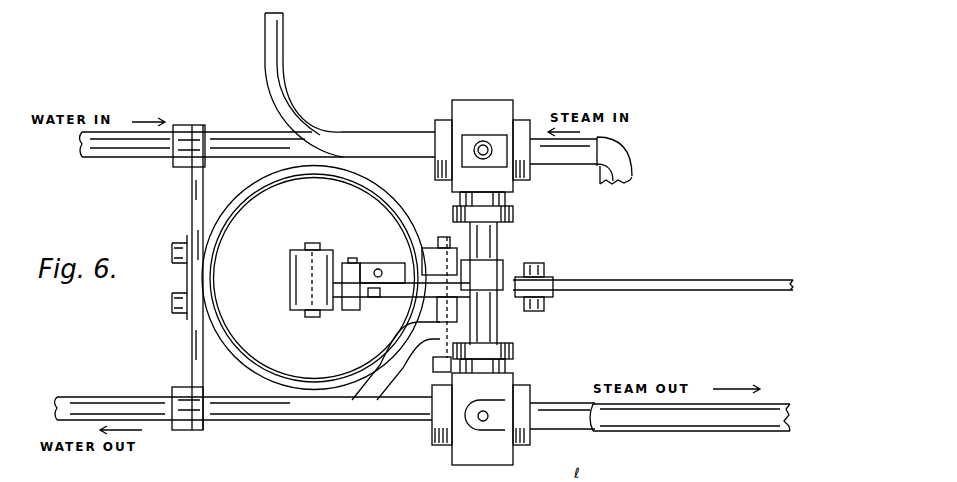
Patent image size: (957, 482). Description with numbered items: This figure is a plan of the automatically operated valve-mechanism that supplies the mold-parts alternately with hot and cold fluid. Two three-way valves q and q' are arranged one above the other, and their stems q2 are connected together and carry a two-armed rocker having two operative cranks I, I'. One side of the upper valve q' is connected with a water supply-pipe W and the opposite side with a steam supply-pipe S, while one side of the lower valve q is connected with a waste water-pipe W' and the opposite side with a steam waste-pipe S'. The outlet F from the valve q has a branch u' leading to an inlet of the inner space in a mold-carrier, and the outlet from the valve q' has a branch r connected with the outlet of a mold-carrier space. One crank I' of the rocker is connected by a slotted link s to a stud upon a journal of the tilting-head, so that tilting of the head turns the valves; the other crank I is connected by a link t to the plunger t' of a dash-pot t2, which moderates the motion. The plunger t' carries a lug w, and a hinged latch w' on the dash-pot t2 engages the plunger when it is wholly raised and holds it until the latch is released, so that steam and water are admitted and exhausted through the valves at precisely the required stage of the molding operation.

The branch r is at (262, 62).
The water supply-pipe W is at (258, 159).
The waste water-pipe W' is at (244, 395).
The dash-pot t2 is at (243, 188).
The plunger t' is at (314, 278).
The link t is at (356, 280).
The lug w is at (373, 273).
The hinged latch w' is at (436, 289).
The rocker crank I is at (369, 315).
The three-way valve q' is at (471, 157).
The valve-stem q2 is at (497, 240).
The three-way valve q is at (471, 422).
The steam supply-pipe S is at (581, 164).
The slotted link s is at (651, 280).
The rocker crank I' is at (553, 296).
The outlet F is at (488, 420).
The branch u' is at (562, 429).
The steam waste-pipe S' is at (690, 431).